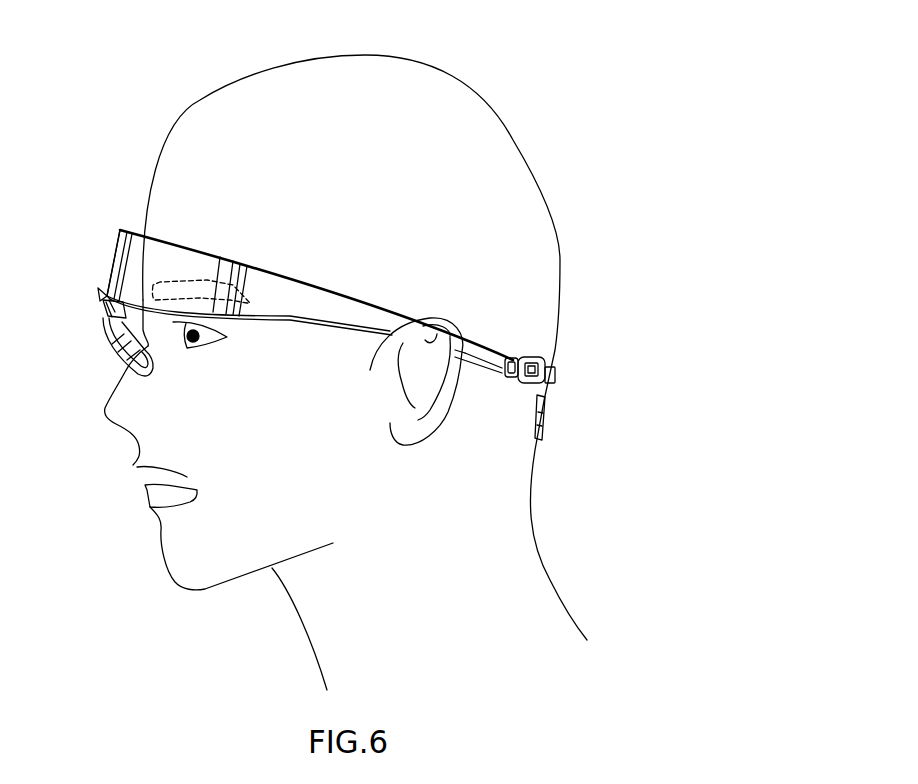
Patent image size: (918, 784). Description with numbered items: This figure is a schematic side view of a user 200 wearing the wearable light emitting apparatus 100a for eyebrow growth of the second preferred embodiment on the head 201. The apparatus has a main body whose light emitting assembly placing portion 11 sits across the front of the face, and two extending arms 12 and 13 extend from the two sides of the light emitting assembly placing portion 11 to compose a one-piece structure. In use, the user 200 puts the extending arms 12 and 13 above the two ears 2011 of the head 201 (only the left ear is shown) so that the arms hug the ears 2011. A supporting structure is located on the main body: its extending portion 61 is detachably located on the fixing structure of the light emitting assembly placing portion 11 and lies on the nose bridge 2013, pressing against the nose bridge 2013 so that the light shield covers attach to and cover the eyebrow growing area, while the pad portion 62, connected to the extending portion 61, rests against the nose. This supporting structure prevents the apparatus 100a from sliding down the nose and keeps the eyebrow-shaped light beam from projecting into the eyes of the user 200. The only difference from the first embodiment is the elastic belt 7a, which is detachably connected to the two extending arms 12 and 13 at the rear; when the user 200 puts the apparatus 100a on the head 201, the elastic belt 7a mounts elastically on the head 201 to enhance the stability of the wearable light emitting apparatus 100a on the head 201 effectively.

The user 200 is at (585, 128).
The head 201 is at (482, 93).
The ear 2011 is at (433, 423).
The nose bridge 2013 is at (110, 396).
The wearable light emitting apparatus for eyebrow growth 100a is at (103, 241).
The light emitting assembly placing portion 11 is at (107, 278).
The extending portion 61 is at (102, 308).
The pad portion 62 is at (120, 358).
The extending arm 12 is at (480, 345).
The elastic belt 7a is at (560, 372).
The extending arm 13 is at (549, 419).